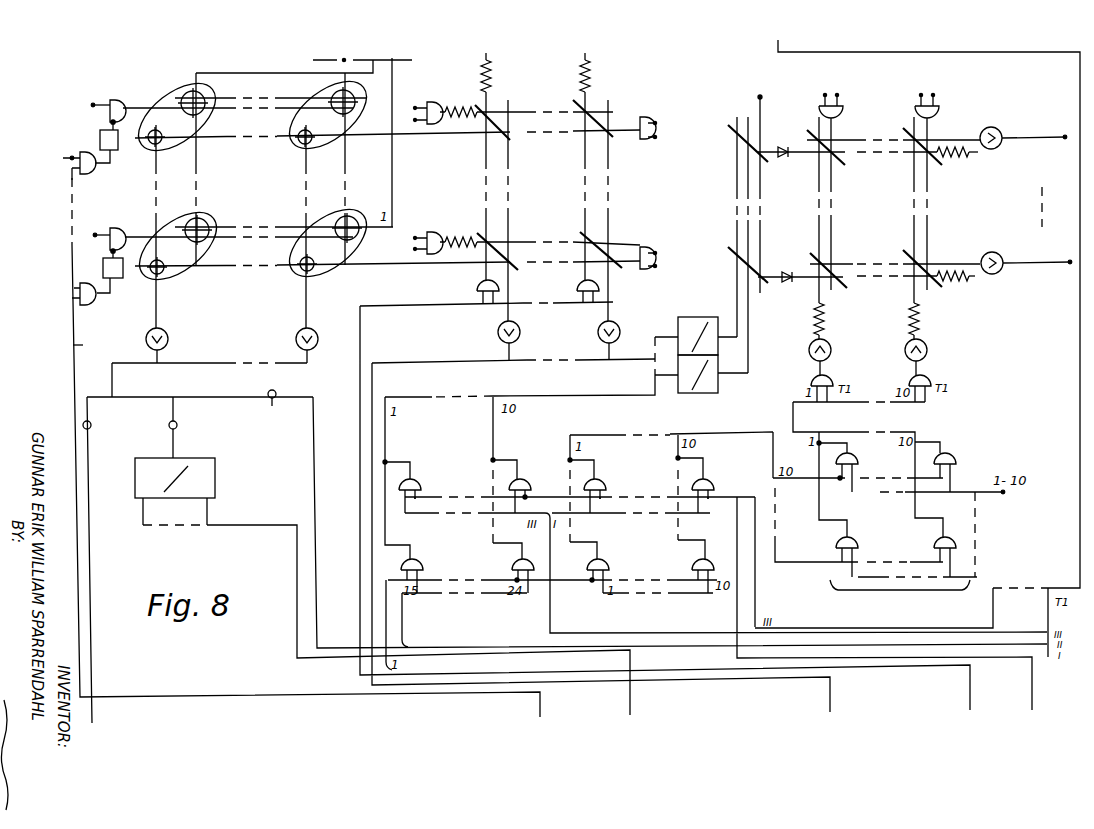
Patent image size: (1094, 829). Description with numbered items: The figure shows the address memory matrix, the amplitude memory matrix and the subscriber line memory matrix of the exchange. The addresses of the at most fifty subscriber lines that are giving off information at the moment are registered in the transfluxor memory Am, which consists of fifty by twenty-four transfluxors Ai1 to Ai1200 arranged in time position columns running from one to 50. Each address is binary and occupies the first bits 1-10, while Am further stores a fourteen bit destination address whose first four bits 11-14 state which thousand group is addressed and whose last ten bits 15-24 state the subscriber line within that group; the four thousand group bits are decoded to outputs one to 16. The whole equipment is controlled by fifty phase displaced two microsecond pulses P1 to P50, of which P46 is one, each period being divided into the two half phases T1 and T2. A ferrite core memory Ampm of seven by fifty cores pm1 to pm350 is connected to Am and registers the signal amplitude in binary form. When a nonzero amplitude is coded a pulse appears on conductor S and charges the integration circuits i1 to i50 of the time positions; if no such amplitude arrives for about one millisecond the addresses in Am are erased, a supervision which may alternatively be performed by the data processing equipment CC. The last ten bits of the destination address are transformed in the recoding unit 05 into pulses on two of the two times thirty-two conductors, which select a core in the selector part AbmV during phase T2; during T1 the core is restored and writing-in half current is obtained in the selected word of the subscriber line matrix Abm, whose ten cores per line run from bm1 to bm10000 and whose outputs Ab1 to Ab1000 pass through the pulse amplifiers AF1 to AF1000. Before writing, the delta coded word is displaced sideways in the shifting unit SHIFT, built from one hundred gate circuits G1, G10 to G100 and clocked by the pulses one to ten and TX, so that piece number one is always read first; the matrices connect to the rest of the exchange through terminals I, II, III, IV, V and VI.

The transfluxor address memory Am is at (311, 228).
The transfluxor Ai1 is at (164, 100).
The transfluxor Ai1200 is at (327, 268).
The time position 50 is at (381, 142).
The data processing equipment CC is at (375, 60).
The phase displaced pulse P50 is at (99, 195).
The phase displaced pulse P1 is at (94, 196).
The integration circuit i50 is at (118, 144).
The integration circuit i1 is at (122, 272).
The conductor S is at (88, 347).
The address bits 1-10 is at (91, 425).
The thousand group address bits 11-14 is at (177, 425).
The subscriber line address bits 15-24 is at (276, 411).
The decoder output 16 is at (382, 586).
The ferrite core amplitude memory Ampm is at (538, 206).
The ferrite core pm350 is at (500, 102).
The ferrite core pm1 is at (610, 245).
The recoding unit 05 is at (702, 393).
The bit selector of subscriber line memory AbmV is at (745, 234).
The half period phase T1 is at (775, 95).
The half period phase T2 is at (841, 107).
The phase displaced pulse P46 is at (897, 68).
The subscriber line memory matrix Abm is at (893, 194).
The pulse amplifier AF1000 is at (995, 127).
The subscriber line output Ab1000 is at (1034, 150).
The ferrite core bm10000 is at (930, 162).
The subscriber line output Ab1 is at (1026, 269).
The pulse amplifier AF1 is at (993, 280).
The ferrite core bm1 is at (818, 276).
The gate circuit G10 is at (858, 474).
The gate circuit G100 is at (959, 474).
The gate circuit G1 is at (855, 559).
The shifting unit SHIFT is at (876, 577).
The timing pulse TX is at (883, 562).
The terminal I is at (113, 725).
The terminal II is at (566, 712).
The terminal III is at (652, 694).
The terminal IV is at (853, 688).
The terminal V is at (990, 682).
The terminal VI is at (1055, 680).